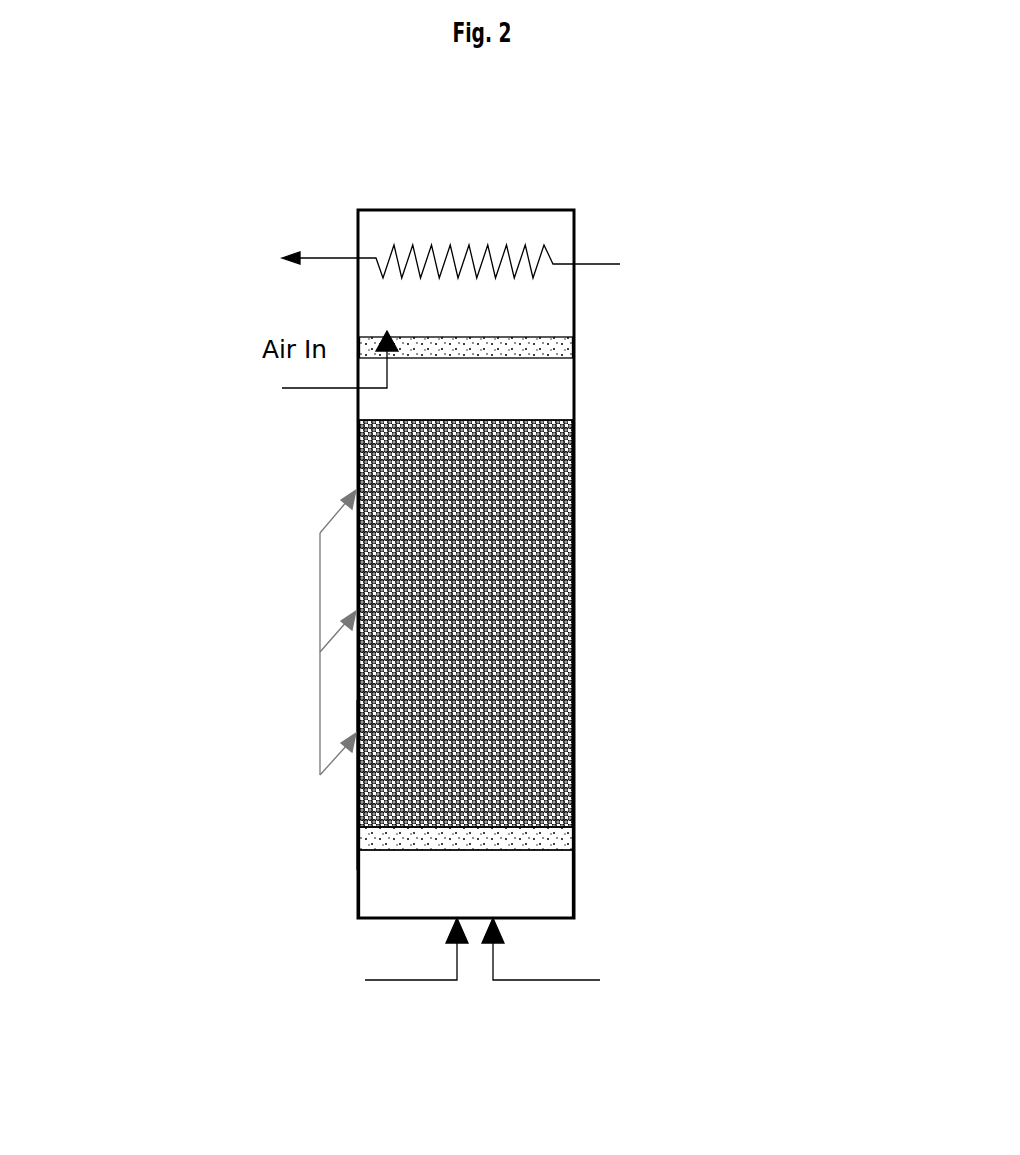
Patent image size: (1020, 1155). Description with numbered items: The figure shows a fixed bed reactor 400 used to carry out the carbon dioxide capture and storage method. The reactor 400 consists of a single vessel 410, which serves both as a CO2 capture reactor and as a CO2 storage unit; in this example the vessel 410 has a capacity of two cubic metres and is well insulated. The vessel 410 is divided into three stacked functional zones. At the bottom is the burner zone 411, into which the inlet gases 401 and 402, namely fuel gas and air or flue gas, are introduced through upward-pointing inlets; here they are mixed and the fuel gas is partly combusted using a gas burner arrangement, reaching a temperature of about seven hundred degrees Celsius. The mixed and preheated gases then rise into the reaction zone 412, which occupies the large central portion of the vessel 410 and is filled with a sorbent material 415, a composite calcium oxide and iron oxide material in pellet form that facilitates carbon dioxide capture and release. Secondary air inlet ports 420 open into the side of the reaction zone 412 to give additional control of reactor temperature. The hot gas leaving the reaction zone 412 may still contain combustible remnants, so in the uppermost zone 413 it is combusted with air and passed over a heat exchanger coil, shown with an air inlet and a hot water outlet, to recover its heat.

The fixed bed reactor 400 is at (783, 173).
The inlet gas 401 is at (333, 953).
The inlet gas 402 is at (672, 953).
The vessel 410 is at (357, 785).
The burner zone 411 is at (585, 853).
The reaction zone 412 is at (584, 420).
The heat recovery zone 413 is at (585, 207).
The sorbent material 415 is at (520, 558).
The secondary air inlet ports 420 is at (320, 617).